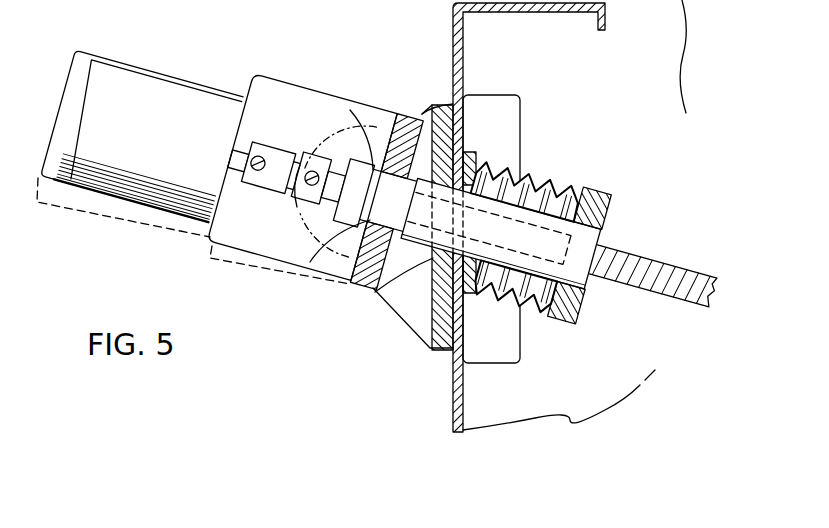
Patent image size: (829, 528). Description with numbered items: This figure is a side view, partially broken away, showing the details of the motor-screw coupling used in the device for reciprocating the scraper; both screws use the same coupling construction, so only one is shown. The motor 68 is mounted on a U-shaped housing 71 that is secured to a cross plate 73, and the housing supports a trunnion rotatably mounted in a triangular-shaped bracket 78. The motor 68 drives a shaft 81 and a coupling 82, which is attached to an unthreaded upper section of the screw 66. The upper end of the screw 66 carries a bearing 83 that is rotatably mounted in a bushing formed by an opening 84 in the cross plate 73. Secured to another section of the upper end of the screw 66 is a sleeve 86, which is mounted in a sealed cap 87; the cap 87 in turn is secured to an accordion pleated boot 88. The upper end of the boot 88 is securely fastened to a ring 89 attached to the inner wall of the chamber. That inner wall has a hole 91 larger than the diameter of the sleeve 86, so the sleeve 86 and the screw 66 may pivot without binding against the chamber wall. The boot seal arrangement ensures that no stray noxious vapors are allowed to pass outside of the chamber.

The screw 66 is at (662, 257).
The motor 68 is at (157, 68).
The U-shaped housing 71 is at (262, 260).
The cross plate 73 is at (405, 112).
The triangular-shaped bracket 78 is at (412, 321).
The shaft 81 is at (238, 150).
The coupling 82 is at (280, 190).
The bearing 83 is at (330, 242).
The opening 84 is at (372, 164).
The sleeve 86 is at (604, 227).
The sealed cap 87 is at (583, 308).
The accordian pleated boot 88 is at (553, 180).
The ring 89 is at (474, 152).
The hole 91 is at (378, 288).